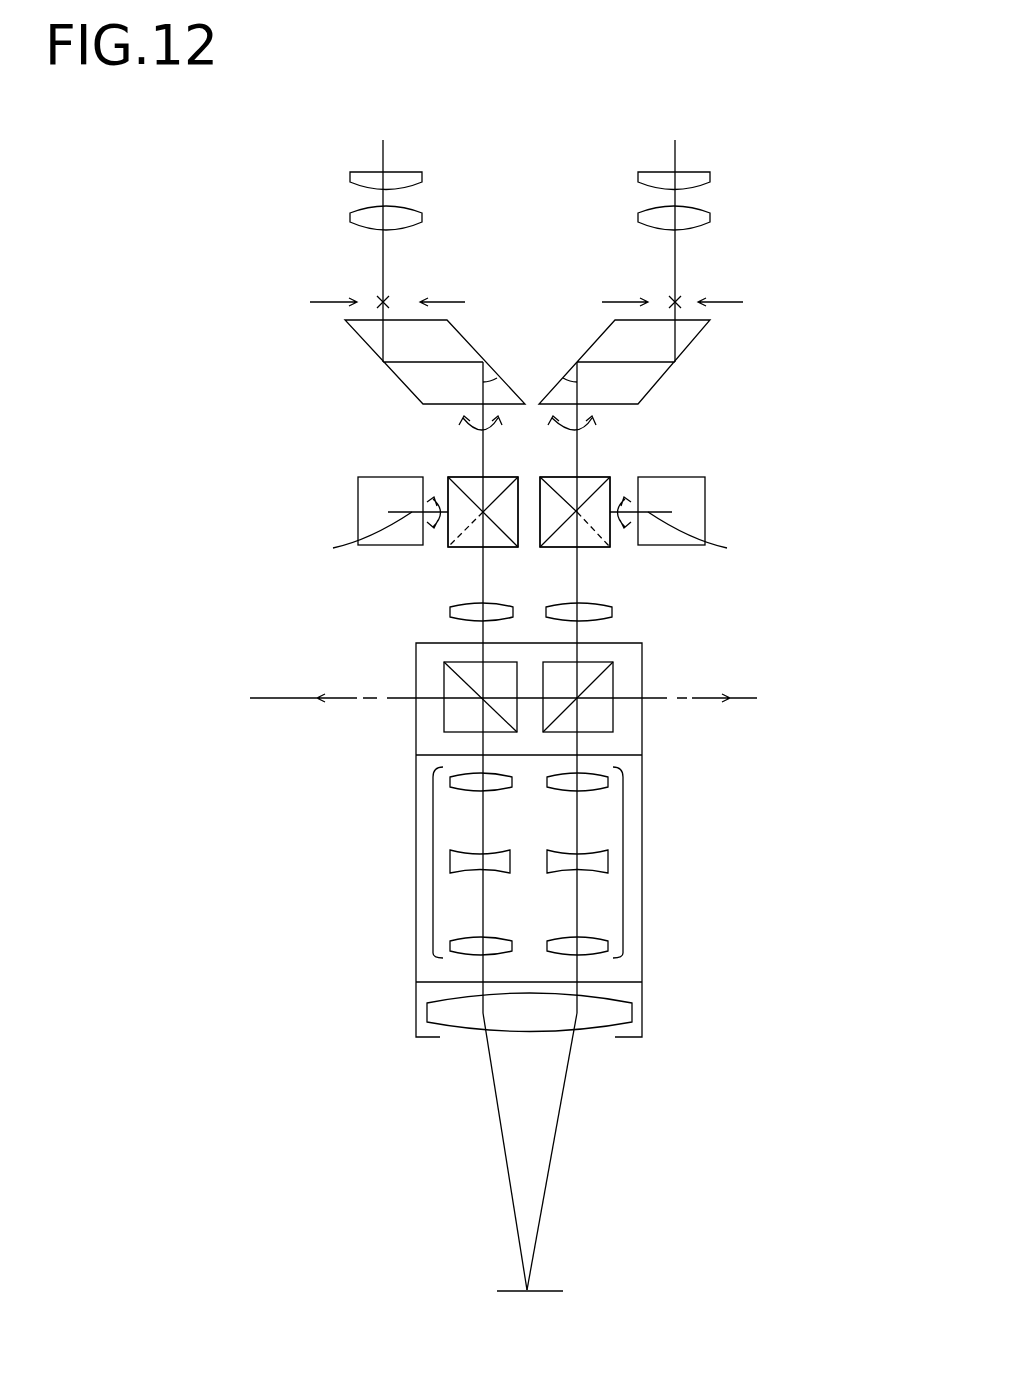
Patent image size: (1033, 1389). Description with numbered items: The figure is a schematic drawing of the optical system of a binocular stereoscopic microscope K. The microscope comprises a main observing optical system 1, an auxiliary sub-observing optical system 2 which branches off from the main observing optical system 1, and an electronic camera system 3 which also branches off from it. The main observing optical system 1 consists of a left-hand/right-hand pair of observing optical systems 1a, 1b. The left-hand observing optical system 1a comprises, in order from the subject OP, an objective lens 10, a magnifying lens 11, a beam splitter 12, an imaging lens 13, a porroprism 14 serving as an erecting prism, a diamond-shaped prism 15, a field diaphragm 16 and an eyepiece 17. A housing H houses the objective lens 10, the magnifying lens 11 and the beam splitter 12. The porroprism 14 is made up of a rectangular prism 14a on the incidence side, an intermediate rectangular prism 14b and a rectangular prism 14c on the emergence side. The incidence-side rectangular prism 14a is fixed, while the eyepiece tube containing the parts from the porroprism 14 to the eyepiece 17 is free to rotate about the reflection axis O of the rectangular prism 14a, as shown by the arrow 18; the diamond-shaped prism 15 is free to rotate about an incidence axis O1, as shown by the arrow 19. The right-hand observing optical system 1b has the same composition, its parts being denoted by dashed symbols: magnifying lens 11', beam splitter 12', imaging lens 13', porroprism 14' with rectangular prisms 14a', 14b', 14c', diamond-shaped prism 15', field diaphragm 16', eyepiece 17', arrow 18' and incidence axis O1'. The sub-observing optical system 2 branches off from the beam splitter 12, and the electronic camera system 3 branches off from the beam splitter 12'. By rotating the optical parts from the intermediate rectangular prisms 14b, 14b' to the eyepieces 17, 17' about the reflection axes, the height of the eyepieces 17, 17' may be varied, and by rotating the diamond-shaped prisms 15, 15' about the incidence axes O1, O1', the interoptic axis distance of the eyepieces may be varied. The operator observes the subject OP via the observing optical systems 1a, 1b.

The binocular stereoscopic microscope K is at (766, 58).
The main observing optical system 1 is at (593, 56).
The left-hand observing optical system 1a is at (440, 137).
The right-hand observing optical system 1b is at (603, 151).
The eyepiece 17 is at (352, 201).
The eyepiece 17' is at (709, 201).
The field diaphragm 16 is at (301, 278).
The field diaphragm 16' is at (751, 278).
The diamond-shaped prism 15 is at (429, 362).
The diamond-shaped prism 15' is at (635, 362).
The incidence axis O1 is at (493, 351).
The incidence axis O1' is at (556, 351).
The arrow 19 is at (460, 428).
The porroprism 14 is at (308, 424).
The porroprism 14' is at (733, 432).
The rectangular prism on the incidence side 14a is at (445, 538).
The rectangular prism on the incidence side 14a' is at (610, 538).
The intermediate rectangular prism 14b is at (360, 508).
The intermediate rectangular prism 14b' is at (703, 508).
The rectangular prism on the emergence side 14c is at (455, 493).
The rectangular prism on the emergence side 14c' is at (592, 493).
The arrow 18 is at (395, 474).
The arrow 18' is at (656, 474).
The reflection axis O is at (531, 539).
The imaging lens 13 is at (445, 614).
The imaging lens 13' is at (628, 614).
The beam splitter 12 is at (436, 713).
The beam splitter 12' is at (622, 713).
The sub-observing optical system 2 is at (268, 722).
The electronic camera system 3 is at (738, 722).
The magnifying lens 11 is at (428, 862).
The magnifying lens 11' is at (630, 862).
The housing H is at (642, 936).
The objective lens 10 is at (440, 1035).
The subject OP is at (545, 1290).